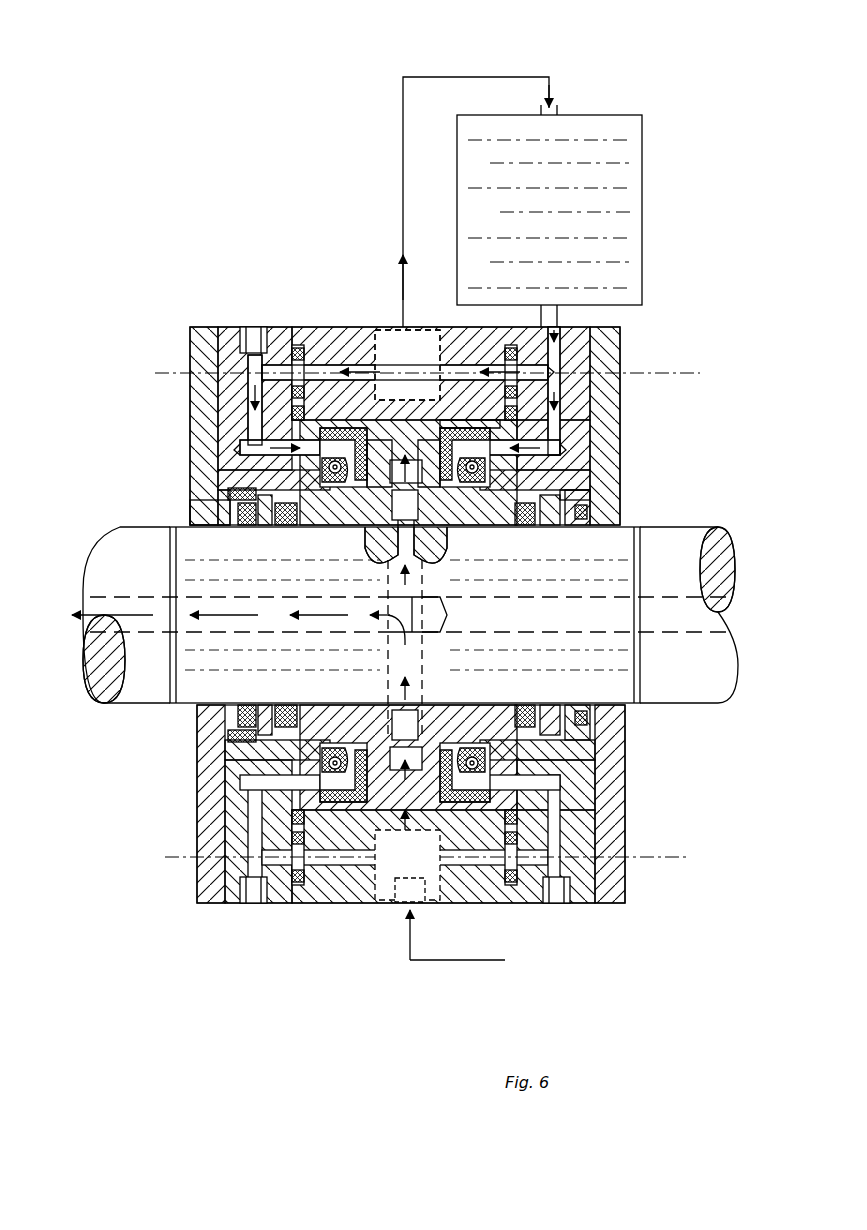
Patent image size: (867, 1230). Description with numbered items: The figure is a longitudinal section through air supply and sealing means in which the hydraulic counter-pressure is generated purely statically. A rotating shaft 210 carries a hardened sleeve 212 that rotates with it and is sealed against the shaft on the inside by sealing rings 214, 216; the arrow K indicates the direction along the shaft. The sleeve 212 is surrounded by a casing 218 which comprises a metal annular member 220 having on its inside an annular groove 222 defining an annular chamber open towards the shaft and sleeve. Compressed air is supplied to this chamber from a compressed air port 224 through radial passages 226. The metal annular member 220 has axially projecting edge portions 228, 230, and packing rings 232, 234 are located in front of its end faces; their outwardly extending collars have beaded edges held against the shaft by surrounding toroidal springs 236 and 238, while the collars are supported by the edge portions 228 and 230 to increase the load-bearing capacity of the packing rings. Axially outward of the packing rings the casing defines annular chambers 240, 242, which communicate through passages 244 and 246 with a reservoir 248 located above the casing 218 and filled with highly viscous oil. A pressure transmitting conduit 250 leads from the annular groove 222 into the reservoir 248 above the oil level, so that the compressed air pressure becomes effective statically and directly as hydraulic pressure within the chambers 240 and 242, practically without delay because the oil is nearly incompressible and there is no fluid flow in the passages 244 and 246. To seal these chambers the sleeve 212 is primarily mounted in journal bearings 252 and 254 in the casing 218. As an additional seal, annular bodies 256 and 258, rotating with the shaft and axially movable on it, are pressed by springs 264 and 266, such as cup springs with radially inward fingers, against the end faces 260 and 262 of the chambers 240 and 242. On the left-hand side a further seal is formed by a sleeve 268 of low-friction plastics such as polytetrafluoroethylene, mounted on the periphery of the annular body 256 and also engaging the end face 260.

The rotating shaft 210 is at (678, 560).
The hardened sleeve 212 is at (498, 510).
The sealing ring 214 is at (290, 528).
The sealing ring 216 is at (522, 527).
The casing 218 is at (406, 421).
The metal annular member 220 is at (425, 455).
The annular groove 222 is at (407, 504).
The compressed air port 224 is at (412, 900).
The radial passages 226 is at (420, 808).
The axially projecting edge portion 228 is at (372, 468).
The axially projecting edge portion 230 is at (427, 474).
The packing ring 232 is at (345, 428).
The packing ring 234 is at (470, 428).
The toroidal spring 236 is at (313, 462).
The toroidal spring 238 is at (470, 470).
The annular chamber 240 is at (327, 463).
The annular chamber 242 is at (475, 452).
The passage 244 is at (234, 348).
The passage 246 is at (553, 386).
The reservoir 248 is at (624, 232).
The pressure transmitting conduit 250 is at (465, 77).
The journal bearing 252 is at (236, 476).
The journal bearing 254 is at (556, 474).
The annular body 256 is at (244, 525).
The annular body 258 is at (580, 527).
The end face 260 is at (192, 512).
The end face 262 is at (600, 497).
The spring 264 is at (265, 525).
The spring 266 is at (552, 527).
The sleeve 268 is at (228, 495).
The flow direction K is at (97, 614).